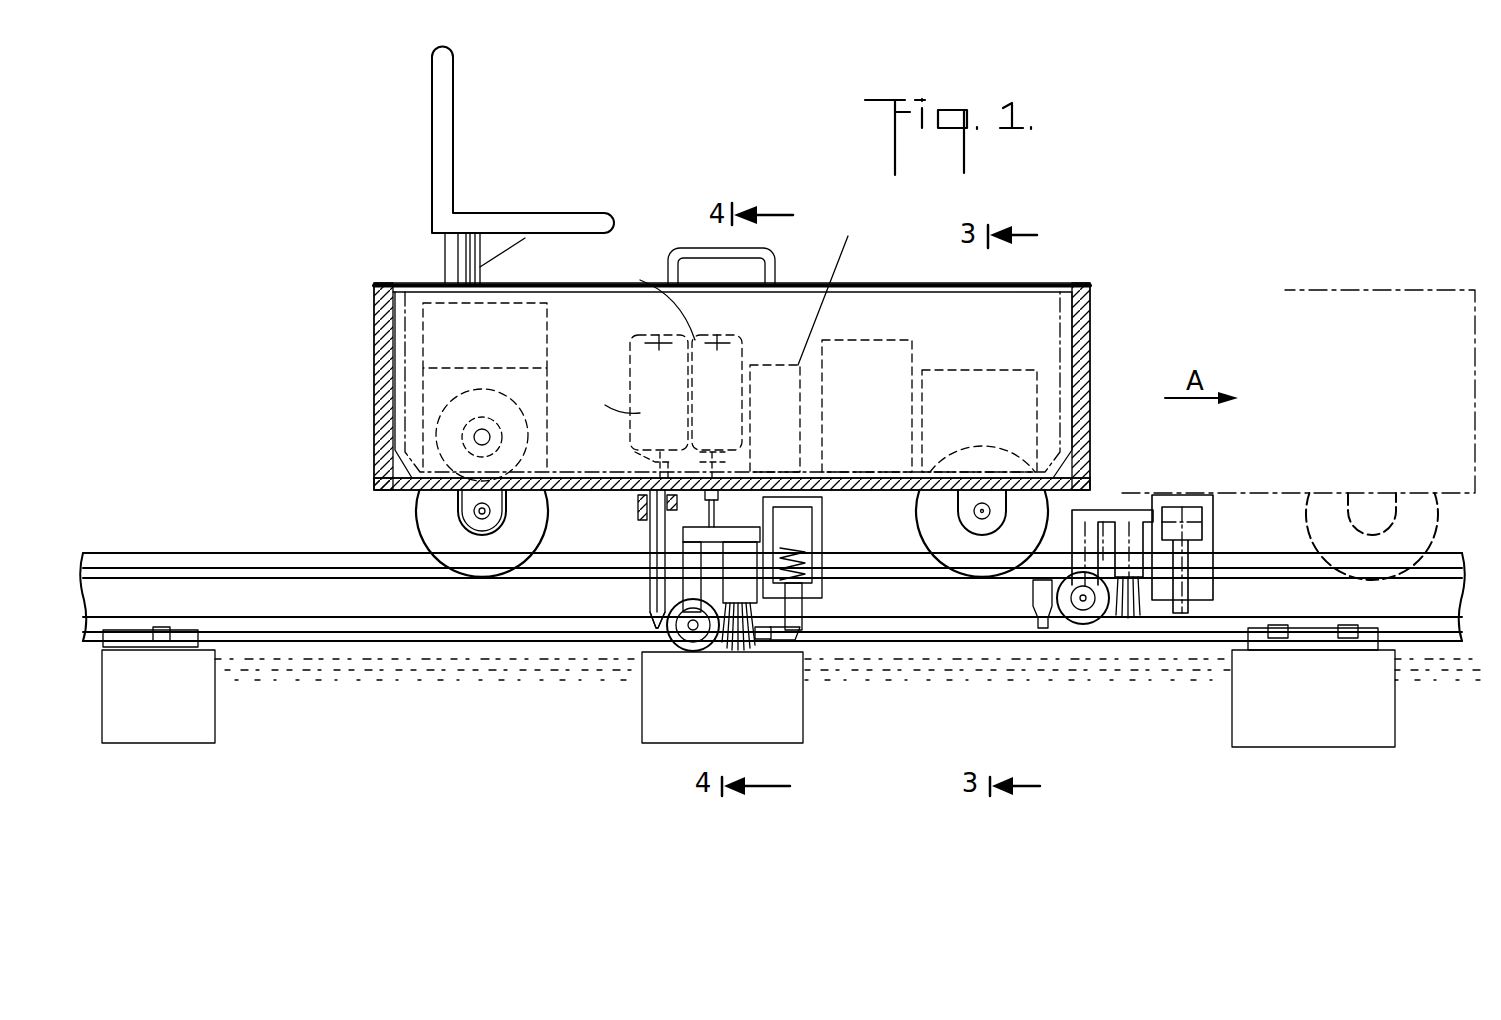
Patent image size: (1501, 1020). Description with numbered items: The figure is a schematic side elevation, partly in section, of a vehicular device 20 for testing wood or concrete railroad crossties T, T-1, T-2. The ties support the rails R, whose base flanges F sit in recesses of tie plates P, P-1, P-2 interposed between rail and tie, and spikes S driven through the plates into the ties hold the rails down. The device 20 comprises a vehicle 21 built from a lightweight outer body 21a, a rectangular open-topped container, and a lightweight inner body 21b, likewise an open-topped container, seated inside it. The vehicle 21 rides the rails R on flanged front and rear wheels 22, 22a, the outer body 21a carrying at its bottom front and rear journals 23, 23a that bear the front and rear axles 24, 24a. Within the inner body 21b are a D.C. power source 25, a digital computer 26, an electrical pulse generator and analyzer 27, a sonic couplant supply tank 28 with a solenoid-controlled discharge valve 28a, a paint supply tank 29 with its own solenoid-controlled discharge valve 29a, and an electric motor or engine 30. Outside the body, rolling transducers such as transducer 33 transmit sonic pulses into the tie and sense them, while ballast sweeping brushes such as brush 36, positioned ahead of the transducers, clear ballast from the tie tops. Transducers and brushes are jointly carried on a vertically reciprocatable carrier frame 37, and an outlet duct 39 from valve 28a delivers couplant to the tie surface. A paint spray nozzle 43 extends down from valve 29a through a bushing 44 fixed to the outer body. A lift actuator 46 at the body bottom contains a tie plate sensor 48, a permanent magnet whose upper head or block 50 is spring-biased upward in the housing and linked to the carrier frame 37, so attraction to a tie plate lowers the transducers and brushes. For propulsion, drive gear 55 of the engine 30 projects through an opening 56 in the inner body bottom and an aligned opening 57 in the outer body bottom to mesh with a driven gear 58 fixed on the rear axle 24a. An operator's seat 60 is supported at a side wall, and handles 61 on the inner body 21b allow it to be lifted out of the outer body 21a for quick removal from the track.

The vehicular device 20 is at (712, 160).
The vehicle 21 is at (1100, 328).
The outer frame or body 21a is at (1093, 425).
The inner frame or body 21b is at (880, 292).
The front railway wheels 22 is at (955, 560).
The rear railway wheels 22a is at (538, 537).
The front journal 23 is at (968, 502).
The rear journal 23a is at (462, 517).
The front axle 24 is at (982, 522).
The rear axle 24a is at (480, 522).
The D.C. power source 25 is at (970, 385).
The digital computer 26 is at (895, 353).
The electrical pulse generator and analyzer 27 is at (772, 375).
The sonic couplant liquid supply tank 28 is at (712, 333).
The solenoid-controlled discharge valve 28a is at (749, 453).
The paint or marking liquid supply tank 29 is at (655, 338).
The solenoid-controlled discharge valve 29a is at (622, 453).
The electric motor or engine 30 is at (420, 313).
The rolling transducer 33 is at (697, 650).
The ballast sweeping brush 36 is at (738, 655).
The carrier frame 37 is at (733, 538).
The outlet duct 39 is at (712, 530).
The paint spray nozzle 43 is at (648, 640).
The bushing 44 is at (637, 536).
The lift actuator 46 is at (840, 498).
The tie plate sensor 48 is at (793, 605).
The head or block 50 is at (800, 540).
The output or drive gear 55 is at (440, 405).
The opening 56 is at (482, 435).
The opening 57 is at (540, 513).
The driven gear 58 is at (455, 511).
The operator's seat 60 is at (553, 224).
The handles or grips 61 is at (776, 262).
The rails R is at (280, 562).
The tie plate P is at (118, 640).
The tie plate P-1 is at (795, 632).
The tie plate P-2 is at (1315, 645).
The spike S is at (165, 650).
The crosstie T is at (185, 730).
The crosstie T-1 is at (650, 740).
The crosstie T-2 is at (1255, 725).
The base flange F is at (338, 630).